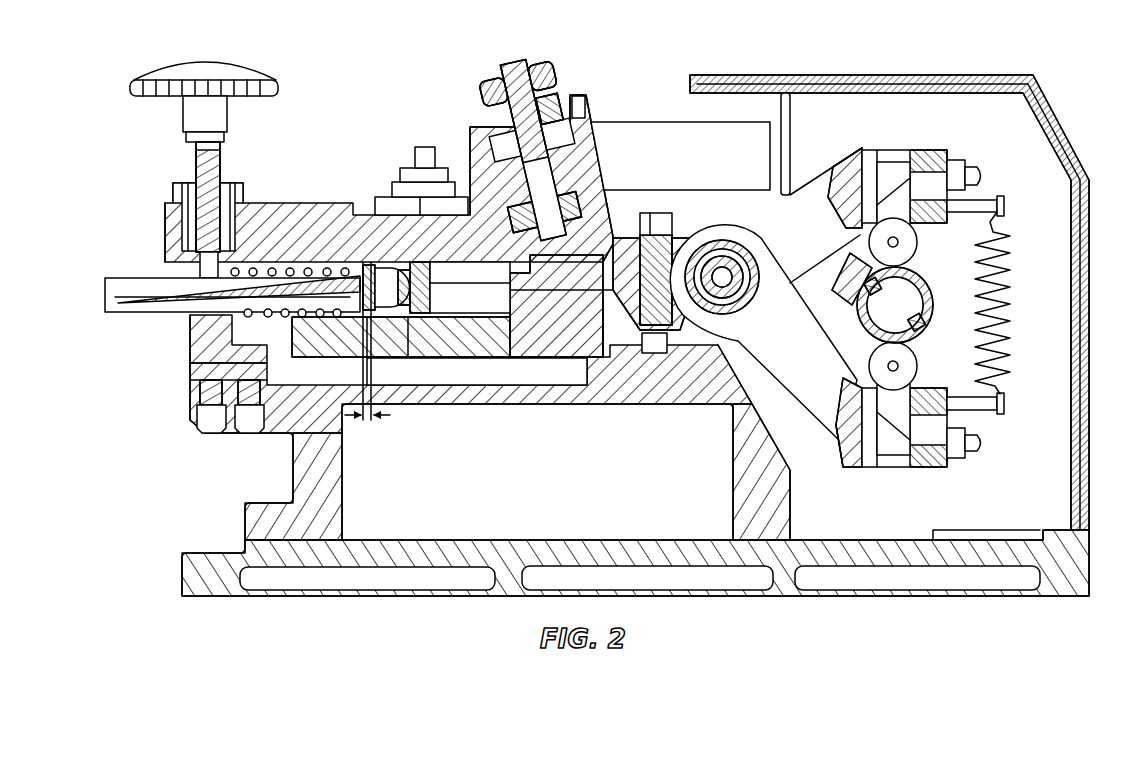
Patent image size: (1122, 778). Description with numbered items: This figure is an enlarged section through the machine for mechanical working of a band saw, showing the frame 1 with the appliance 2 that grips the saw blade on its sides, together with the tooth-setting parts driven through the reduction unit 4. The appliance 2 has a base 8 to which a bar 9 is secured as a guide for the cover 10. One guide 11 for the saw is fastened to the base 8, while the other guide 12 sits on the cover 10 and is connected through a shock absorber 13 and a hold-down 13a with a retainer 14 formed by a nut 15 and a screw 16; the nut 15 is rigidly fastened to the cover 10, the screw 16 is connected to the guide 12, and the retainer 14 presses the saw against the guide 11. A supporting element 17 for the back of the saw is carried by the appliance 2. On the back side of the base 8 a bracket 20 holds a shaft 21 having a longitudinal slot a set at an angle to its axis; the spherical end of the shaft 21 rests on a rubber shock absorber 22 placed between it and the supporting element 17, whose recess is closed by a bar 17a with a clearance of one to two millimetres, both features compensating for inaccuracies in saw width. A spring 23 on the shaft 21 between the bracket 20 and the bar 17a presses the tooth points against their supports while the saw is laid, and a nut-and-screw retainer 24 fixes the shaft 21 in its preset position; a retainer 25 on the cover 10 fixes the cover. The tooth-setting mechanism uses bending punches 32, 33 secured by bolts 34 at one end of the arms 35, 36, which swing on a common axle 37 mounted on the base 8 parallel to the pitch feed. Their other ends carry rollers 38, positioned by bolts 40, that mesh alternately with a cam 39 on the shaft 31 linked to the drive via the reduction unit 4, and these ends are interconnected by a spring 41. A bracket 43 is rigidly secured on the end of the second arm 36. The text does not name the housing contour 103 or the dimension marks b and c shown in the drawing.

The frame 1 is at (202, 553).
The appliance for gripping the saw 2 is at (290, 204).
The reduction unit 4 is at (846, 460).
The base 8 is at (246, 478).
The bar 9 is at (308, 346).
The cover 10 is at (257, 218).
The guide 11 is at (554, 352).
The guide 12 is at (512, 290).
The shock absorber 13 is at (600, 170).
The hold-down 13a is at (545, 212).
The retainer 14 is at (494, 92).
The nut 15 is at (518, 66).
The screw 16 is at (570, 138).
The supporting element 17 is at (426, 299).
The bar 17a is at (363, 215).
The bracket 20 is at (192, 355).
The shaft 21 is at (140, 312).
The rubber shock absorber 22 is at (420, 365).
The spring 23 is at (192, 324).
The retainer 24 is at (226, 68).
The retainer 25 is at (416, 162).
The shaft 31 is at (912, 297).
The tool 32 is at (640, 345).
The tool 33 is at (630, 250).
The bolts 34 is at (668, 224).
The arm 35 is at (828, 420).
The arm 36 is at (812, 190).
The common axle 37 is at (745, 265).
The rollers 38 is at (868, 242).
The cam 39 is at (897, 265).
The bolts 40 is at (956, 178).
The spring 41 is at (1000, 270).
The bracket 43 is at (647, 128).
The housing cover 103 is at (1048, 118).
The longitudinal slot a is at (162, 290).
The gap dimension b is at (367, 431).
The interface c is at (604, 357).